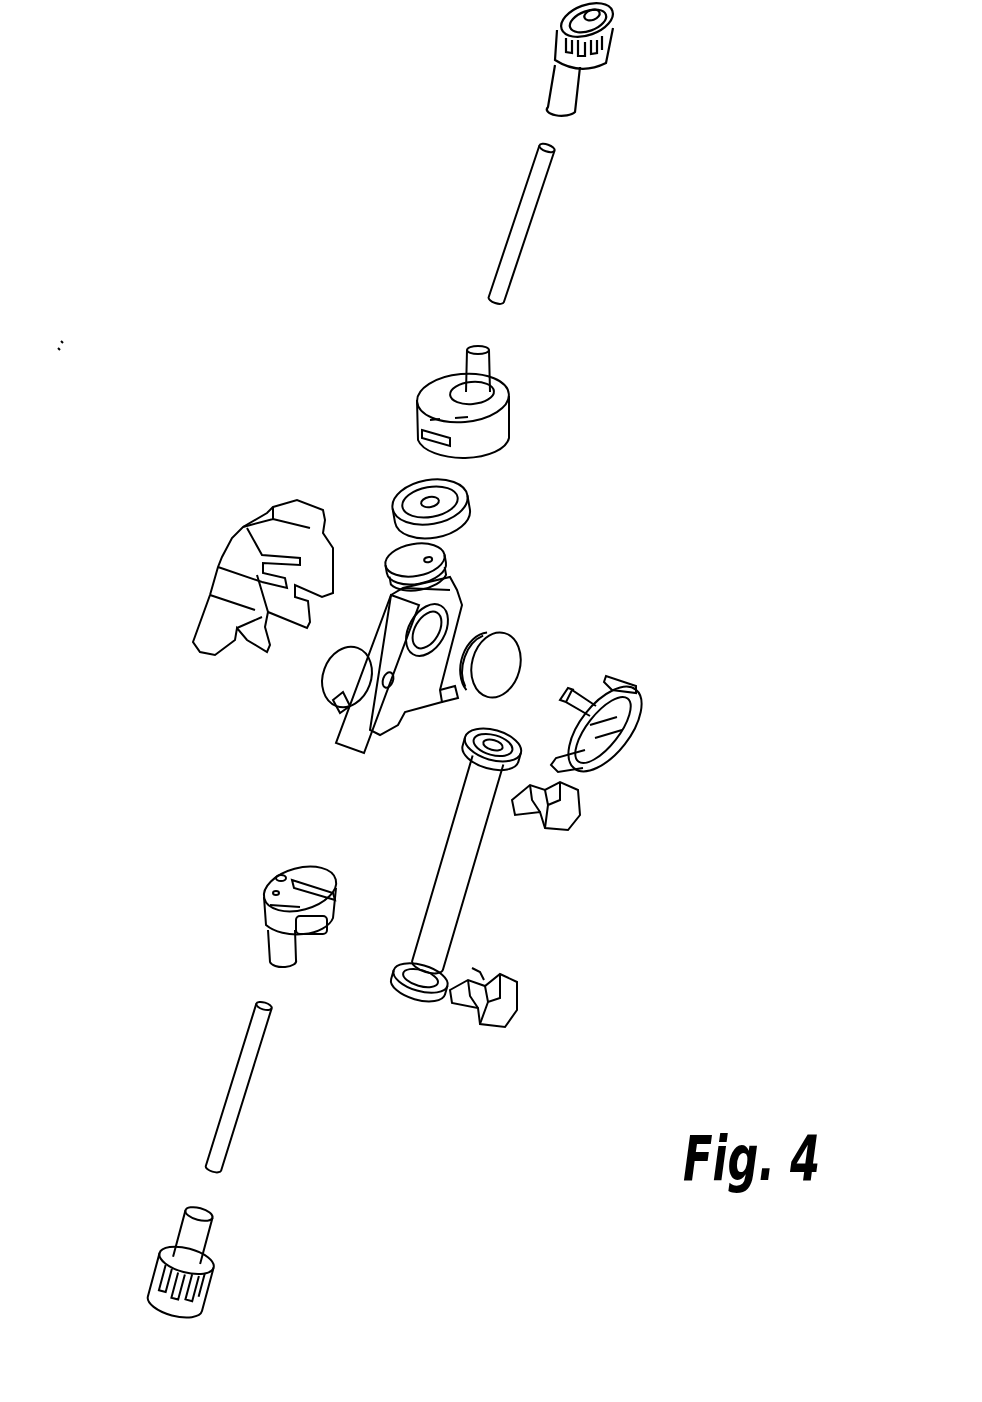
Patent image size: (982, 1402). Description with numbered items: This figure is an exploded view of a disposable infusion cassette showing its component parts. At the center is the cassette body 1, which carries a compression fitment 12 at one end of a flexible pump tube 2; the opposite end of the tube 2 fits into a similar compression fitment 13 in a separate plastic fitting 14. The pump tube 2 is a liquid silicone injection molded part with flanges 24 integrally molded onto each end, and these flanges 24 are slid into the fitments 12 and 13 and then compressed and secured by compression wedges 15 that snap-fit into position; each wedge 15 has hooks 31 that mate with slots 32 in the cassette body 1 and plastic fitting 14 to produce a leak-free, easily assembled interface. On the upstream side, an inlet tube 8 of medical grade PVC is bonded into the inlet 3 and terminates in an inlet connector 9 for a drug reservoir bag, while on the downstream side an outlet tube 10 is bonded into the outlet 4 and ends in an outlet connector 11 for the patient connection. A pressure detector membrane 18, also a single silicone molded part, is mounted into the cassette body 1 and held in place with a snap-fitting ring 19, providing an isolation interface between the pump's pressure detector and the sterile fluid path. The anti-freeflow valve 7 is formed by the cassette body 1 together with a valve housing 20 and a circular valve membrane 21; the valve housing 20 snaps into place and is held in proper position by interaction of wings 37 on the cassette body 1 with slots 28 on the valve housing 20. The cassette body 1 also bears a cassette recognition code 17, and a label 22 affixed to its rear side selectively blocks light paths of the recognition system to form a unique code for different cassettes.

The cassette body 1 is at (310, 698).
The flexible pump tube 2 is at (438, 917).
The inlet 3 is at (255, 947).
The outlet 4 is at (513, 353).
The anti-freeflow valve 7 is at (414, 358).
The inlet tube 8 is at (227, 1135).
The inlet connector 9 is at (188, 1252).
The outlet tube 10 is at (530, 198).
The outlet connector 11 is at (568, 90).
The compression fitment 12 is at (407, 710).
The compression fitment 13 is at (312, 925).
The plastic fitting 14 is at (277, 916).
The compression wedge 15 is at (573, 807).
The cassette recognition code 17 is at (337, 703).
The pressure detector membrane 18 is at (512, 660).
The snap-fitting ring 19 is at (635, 693).
The valve housing 20 is at (498, 402).
The circular valve membrane 21 is at (467, 500).
The label 22 is at (383, 664).
The flanges 24 is at (490, 728).
The slots 28 is at (445, 440).
The hooks 31 is at (477, 972).
The slots 32 is at (303, 875).
The wings 37 is at (442, 572).